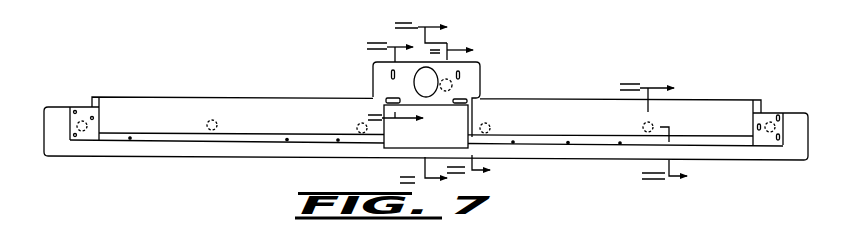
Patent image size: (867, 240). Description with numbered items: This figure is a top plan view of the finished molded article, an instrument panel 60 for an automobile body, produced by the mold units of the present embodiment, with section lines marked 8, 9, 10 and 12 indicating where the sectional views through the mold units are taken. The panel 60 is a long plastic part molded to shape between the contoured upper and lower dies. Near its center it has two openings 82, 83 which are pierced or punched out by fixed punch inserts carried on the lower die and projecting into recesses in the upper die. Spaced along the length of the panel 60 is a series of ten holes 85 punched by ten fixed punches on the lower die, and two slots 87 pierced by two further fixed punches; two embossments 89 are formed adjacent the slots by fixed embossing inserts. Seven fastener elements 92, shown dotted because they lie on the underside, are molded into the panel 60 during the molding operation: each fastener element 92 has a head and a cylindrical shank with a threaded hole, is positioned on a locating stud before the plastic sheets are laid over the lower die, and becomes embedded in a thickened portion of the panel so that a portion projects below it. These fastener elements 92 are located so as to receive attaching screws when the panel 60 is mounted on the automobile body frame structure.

The instrument panel 60 is at (248, 97).
The opening 82 is at (437, 76).
The opening 83 is at (457, 120).
The holes 85 is at (235, 140).
The slots 87 is at (389, 73).
The embossments 89 is at (386, 98).
The fastener element 92 is at (88, 123).
The section line 8- 8 is at (467, 111).
The section line 9- 9 is at (433, 106).
The section line 10- 10 is at (670, 131).
The section line 12- 12 is at (390, 81).